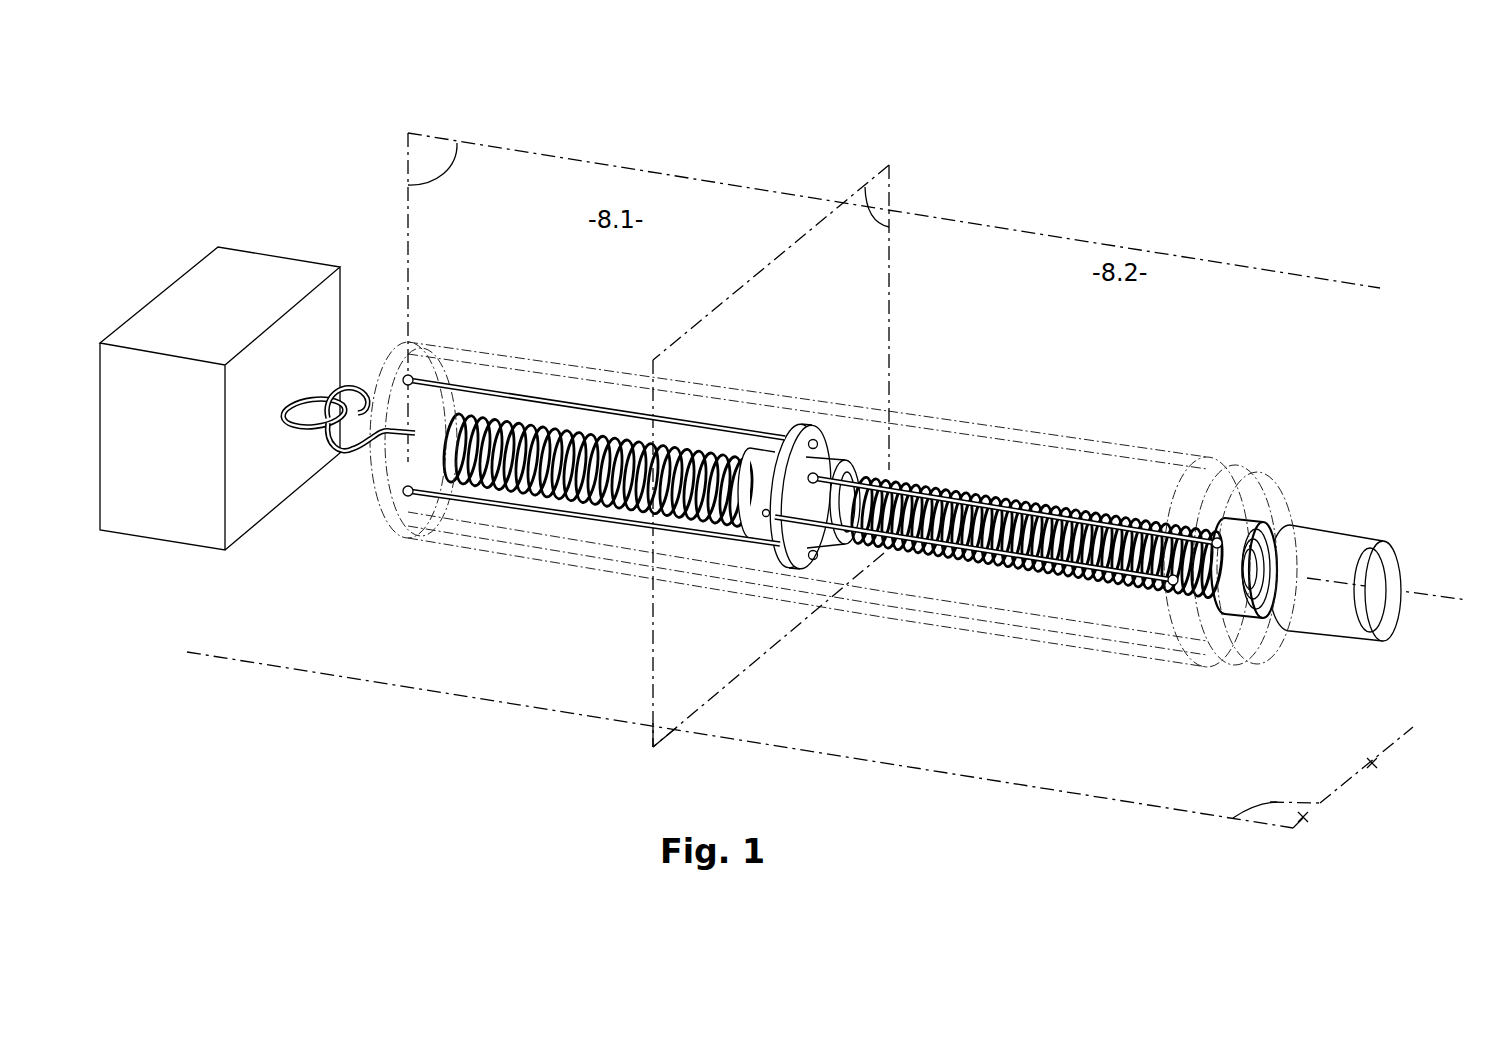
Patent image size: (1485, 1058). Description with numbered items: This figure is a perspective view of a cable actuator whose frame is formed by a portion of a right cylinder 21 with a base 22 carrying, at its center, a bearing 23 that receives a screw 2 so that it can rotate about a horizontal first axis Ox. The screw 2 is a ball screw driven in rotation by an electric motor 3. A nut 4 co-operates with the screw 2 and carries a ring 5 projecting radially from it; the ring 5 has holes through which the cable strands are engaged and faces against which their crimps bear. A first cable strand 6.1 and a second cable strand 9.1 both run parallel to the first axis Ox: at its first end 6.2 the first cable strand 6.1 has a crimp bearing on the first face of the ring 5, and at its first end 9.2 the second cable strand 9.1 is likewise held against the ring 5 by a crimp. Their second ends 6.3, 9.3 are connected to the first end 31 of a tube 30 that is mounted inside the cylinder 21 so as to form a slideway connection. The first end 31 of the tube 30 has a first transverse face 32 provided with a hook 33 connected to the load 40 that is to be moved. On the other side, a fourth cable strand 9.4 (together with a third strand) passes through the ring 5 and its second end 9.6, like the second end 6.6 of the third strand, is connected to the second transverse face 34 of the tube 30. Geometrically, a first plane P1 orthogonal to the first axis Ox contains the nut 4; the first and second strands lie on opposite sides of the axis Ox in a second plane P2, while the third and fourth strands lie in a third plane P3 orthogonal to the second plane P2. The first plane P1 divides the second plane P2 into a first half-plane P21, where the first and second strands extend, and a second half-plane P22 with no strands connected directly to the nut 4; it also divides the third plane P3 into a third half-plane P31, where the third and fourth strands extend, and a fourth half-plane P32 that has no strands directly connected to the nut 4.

The load 40 is at (282, 272).
The first transverse face 32 is at (407, 410).
The hook 33 is at (345, 455).
The first end of the tube 31 is at (433, 377).
The second end of the first cable strand 6.3 is at (420, 380).
The tube 30 is at (547, 373).
The first cable strand 6.1 is at (610, 406).
The first end of the first cable strand 6.2 is at (750, 433).
The ring 5 is at (818, 424).
The nut 4 is at (828, 460).
The right cylinder 21 is at (1027, 433).
The second transverse face 34 is at (1178, 503).
The second end of the third cable strand 6.6 is at (1215, 540).
The bearing 23 is at (1252, 517).
The electric motor 3 is at (1340, 540).
The second end of the second cable strand 9.3 is at (397, 493).
The second cable strand 9.1 is at (593, 520).
The first end of the second cable strand 9.2 is at (737, 548).
The fourth cable strand 9.4 is at (957, 557).
The second end of the fourth cable strand 9.6 is at (1147, 583).
The screw 2 is at (1188, 588).
The base 22 is at (1257, 653).
The first plane P1 is at (877, 201).
The second plane P2 is at (435, 143).
The first half-plane P21 is at (758, 195).
The second half-plane P22 is at (1180, 268).
The third plane P3 is at (1303, 817).
The third half-plane P31 is at (1353, 752).
The fourth half-plane P32 is at (467, 695).
The first axis Ox is at (1440, 603).